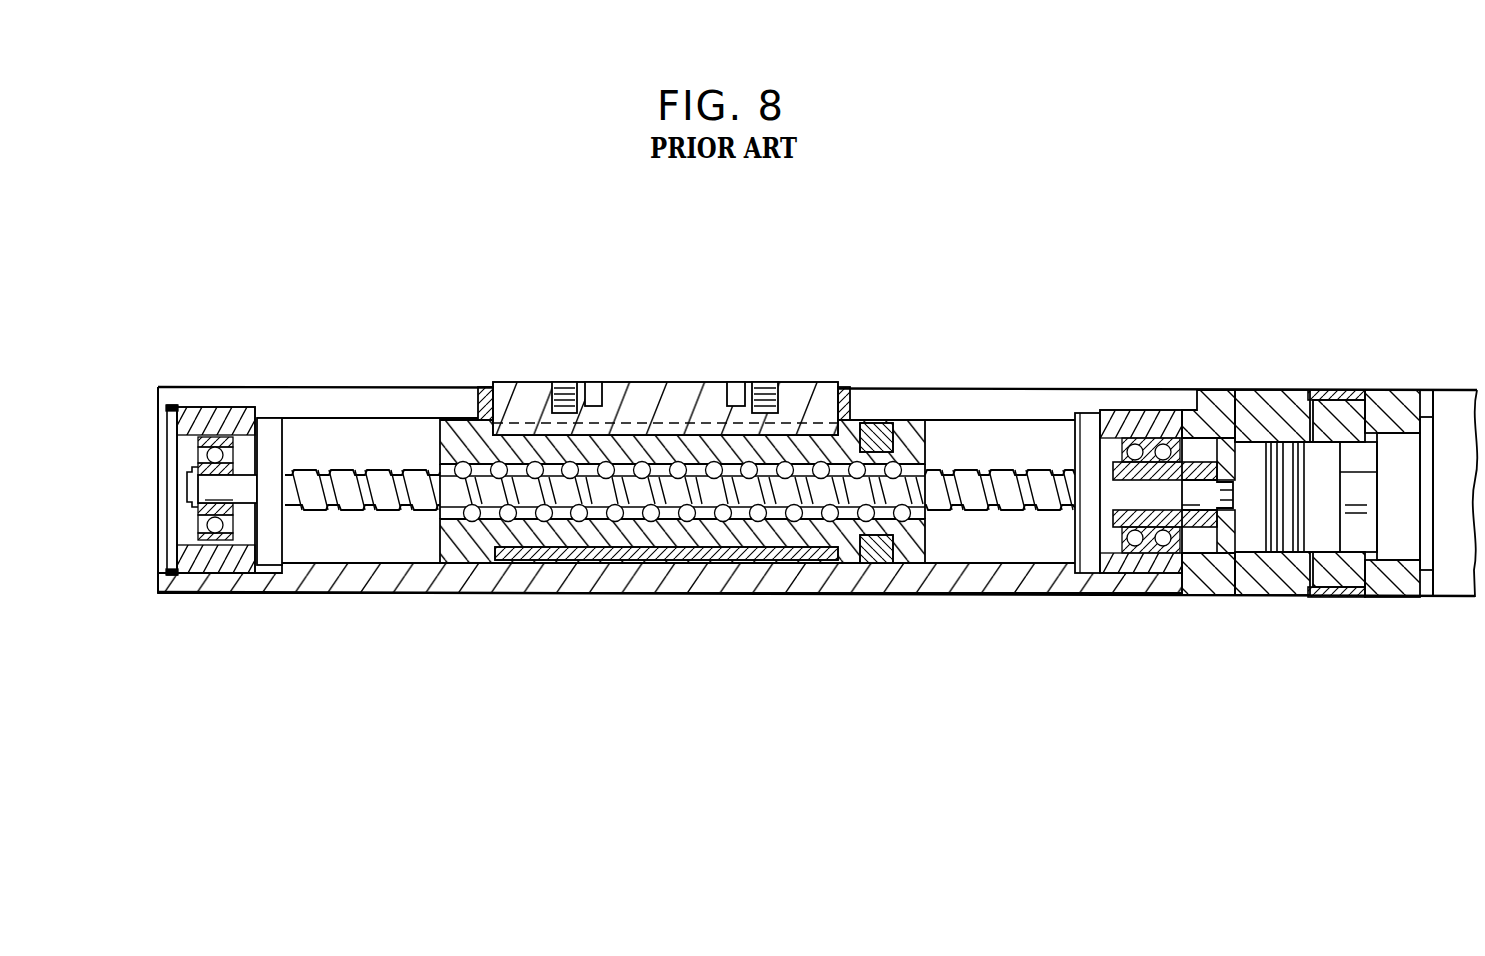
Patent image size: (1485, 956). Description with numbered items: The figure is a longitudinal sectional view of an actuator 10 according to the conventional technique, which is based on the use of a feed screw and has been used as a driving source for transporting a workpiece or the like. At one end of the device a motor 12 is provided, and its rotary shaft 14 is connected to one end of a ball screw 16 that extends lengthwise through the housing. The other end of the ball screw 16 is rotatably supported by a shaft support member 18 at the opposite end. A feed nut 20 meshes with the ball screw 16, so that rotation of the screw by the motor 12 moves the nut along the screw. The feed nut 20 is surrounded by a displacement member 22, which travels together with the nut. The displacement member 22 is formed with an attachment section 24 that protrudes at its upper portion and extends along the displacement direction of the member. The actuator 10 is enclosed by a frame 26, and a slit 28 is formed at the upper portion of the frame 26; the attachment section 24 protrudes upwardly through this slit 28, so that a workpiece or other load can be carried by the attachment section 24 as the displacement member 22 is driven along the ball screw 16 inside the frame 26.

The actuator 10 is at (1270, 208).
The motor 12 is at (1453, 407).
The rotary shaft 14 is at (1357, 488).
The ball screw 16 is at (983, 485).
The shaft support member 18 is at (217, 425).
The feed nut 20 is at (788, 447).
The displacement member 22 is at (667, 552).
The attachment section 24 is at (662, 398).
The frame 26 is at (430, 582).
The slit 28 is at (400, 402).